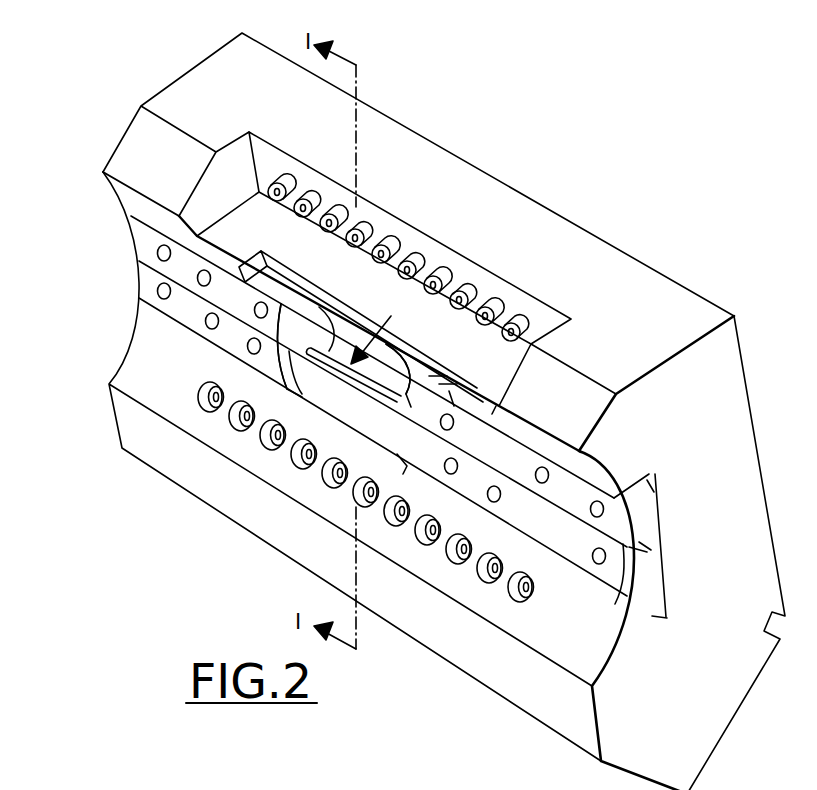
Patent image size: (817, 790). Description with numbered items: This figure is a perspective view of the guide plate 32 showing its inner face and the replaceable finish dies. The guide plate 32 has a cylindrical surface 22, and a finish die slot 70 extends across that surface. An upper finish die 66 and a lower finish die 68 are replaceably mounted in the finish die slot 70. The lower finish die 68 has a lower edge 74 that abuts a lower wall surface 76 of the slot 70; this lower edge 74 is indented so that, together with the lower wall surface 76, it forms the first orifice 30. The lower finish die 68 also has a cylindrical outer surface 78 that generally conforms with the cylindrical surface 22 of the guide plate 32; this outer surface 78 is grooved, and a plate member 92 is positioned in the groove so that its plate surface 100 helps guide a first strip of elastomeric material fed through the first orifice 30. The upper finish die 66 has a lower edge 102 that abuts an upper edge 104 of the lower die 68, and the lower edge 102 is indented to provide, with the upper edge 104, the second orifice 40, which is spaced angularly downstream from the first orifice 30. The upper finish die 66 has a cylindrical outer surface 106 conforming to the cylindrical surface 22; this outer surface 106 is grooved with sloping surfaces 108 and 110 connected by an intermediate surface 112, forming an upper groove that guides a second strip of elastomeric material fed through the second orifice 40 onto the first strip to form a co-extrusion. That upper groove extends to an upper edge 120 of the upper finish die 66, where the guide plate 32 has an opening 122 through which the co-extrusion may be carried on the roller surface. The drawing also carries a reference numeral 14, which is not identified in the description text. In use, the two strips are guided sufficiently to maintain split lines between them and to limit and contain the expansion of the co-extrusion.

The slide member 14 is at (386, 320).
The cylindrical surface 22 is at (582, 664).
The first orifice 30 is at (404, 462).
The guide plate 32 is at (730, 698).
The second orifice 40 is at (392, 403).
The upper finish die 66 is at (638, 483).
The lower finish die 68 is at (657, 563).
The finish die slot 70 is at (652, 497).
The lower edge 74 is at (652, 612).
The lower wall surface 76 is at (637, 595).
The cylindrical outer surface 78 is at (152, 272).
The plate member 92 is at (306, 410).
The plate surface 100 is at (333, 392).
The lower edge 102 is at (643, 546).
The upper edge 104 is at (645, 541).
The cylindrical outer surface 106 is at (150, 234).
The sloping surface 108 is at (303, 315).
The sloping surface 110 is at (403, 370).
The intermediate surface 112 is at (347, 337).
The upper edge 120 is at (450, 380).
The opening 122 is at (437, 373).